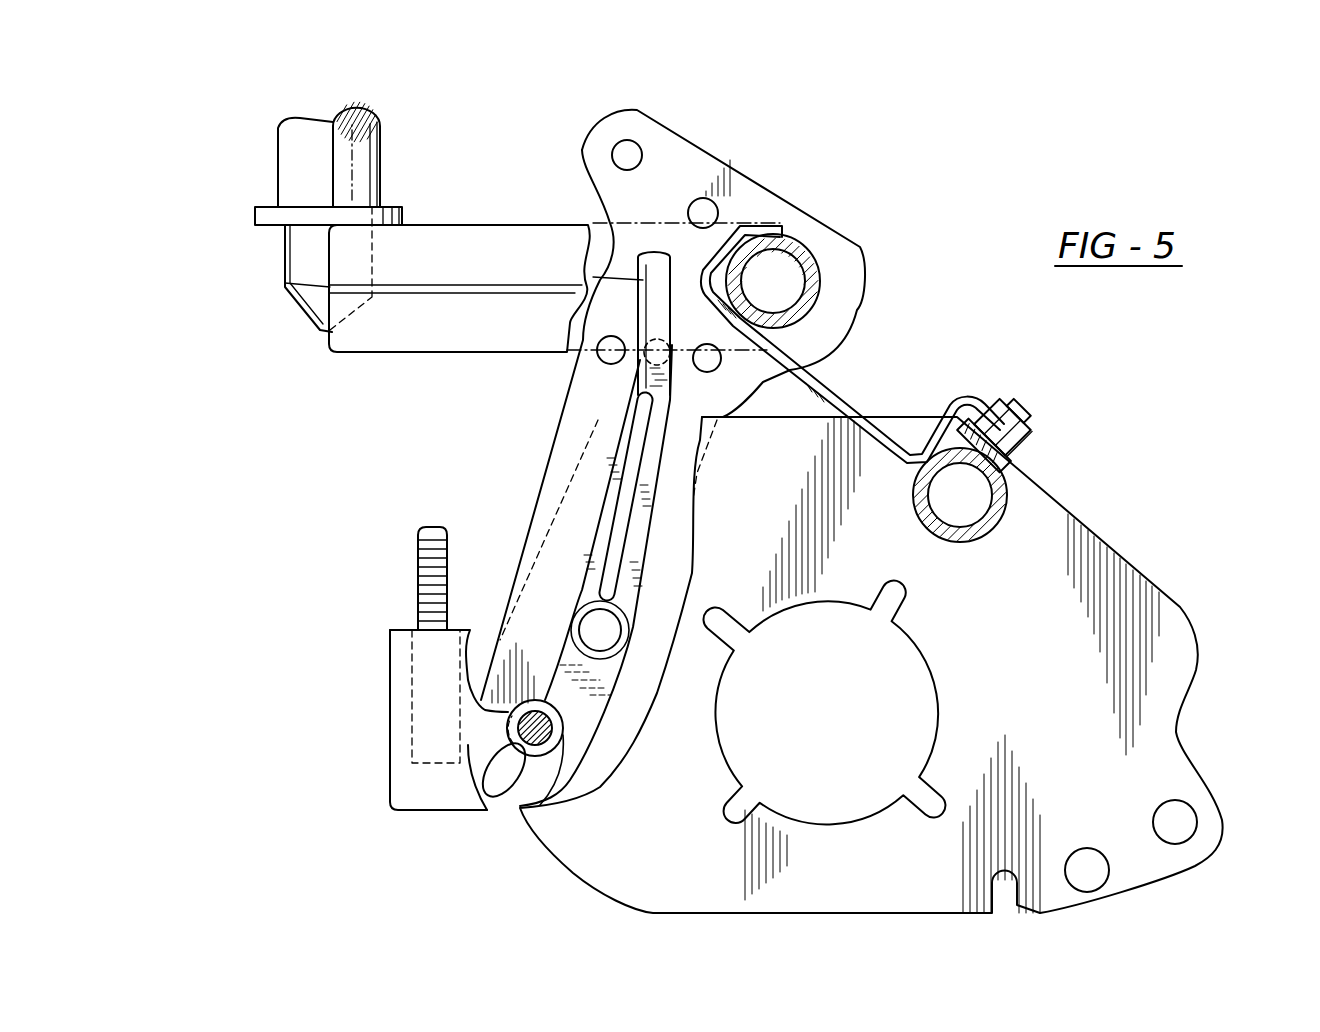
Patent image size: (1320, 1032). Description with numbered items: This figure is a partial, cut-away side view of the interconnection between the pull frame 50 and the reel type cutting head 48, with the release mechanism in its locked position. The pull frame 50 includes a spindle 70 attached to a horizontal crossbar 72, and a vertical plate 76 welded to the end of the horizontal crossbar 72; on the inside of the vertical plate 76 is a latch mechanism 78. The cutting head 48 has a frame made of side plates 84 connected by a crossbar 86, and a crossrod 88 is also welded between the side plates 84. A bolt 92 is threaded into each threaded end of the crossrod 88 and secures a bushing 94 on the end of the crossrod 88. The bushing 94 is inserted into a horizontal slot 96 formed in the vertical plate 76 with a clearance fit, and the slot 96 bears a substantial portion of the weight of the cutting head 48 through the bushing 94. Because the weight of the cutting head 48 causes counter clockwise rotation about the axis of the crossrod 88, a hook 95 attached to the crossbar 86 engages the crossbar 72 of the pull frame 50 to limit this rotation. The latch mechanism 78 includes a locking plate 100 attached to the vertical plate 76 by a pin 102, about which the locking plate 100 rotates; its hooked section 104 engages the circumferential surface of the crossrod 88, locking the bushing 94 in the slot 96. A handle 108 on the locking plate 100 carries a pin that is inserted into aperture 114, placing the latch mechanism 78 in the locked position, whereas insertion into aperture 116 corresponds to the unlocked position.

The cutting head 48 is at (1205, 575).
The pull frame 50 is at (478, 210).
The spindle 70 is at (288, 165).
The horizontal crossbar 72 is at (440, 238).
The vertical plate 76 is at (703, 163).
The latch mechanism 78 is at (597, 507).
The side plate 84 is at (1030, 664).
The crossbar 86 is at (1020, 508).
The crossrod 88 is at (507, 727).
The bolt 92 is at (533, 740).
The bushing 94 is at (537, 740).
The hook 95 is at (815, 375).
The horizontal slot 96 is at (467, 720).
The locking plate 100 is at (620, 440).
The pin 102 is at (580, 600).
The hooked section 104 is at (512, 745).
The handle 108 is at (640, 280).
The aperture 114 is at (650, 372).
The aperture 116 is at (598, 353).